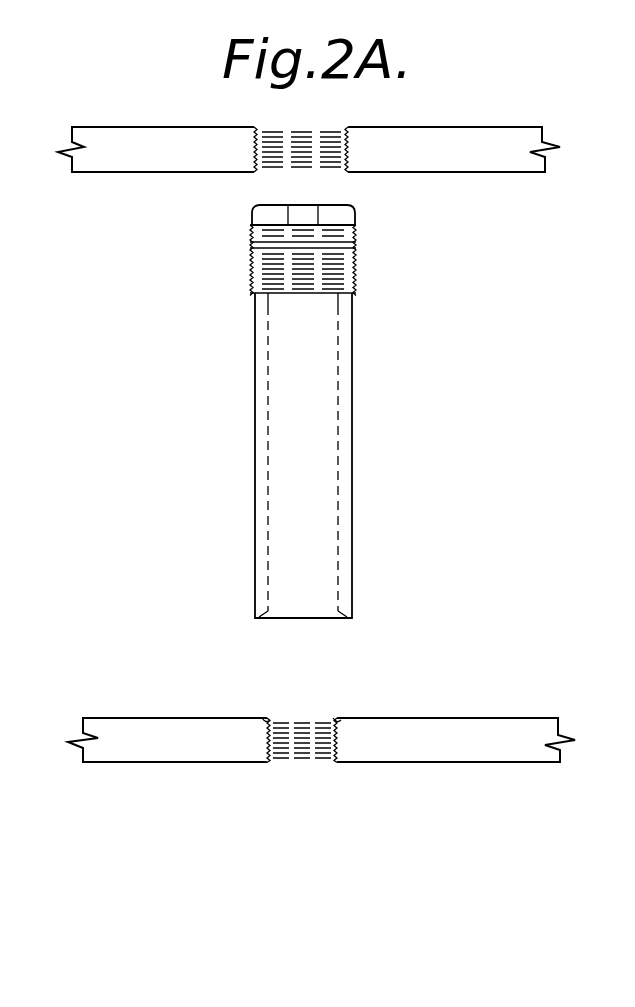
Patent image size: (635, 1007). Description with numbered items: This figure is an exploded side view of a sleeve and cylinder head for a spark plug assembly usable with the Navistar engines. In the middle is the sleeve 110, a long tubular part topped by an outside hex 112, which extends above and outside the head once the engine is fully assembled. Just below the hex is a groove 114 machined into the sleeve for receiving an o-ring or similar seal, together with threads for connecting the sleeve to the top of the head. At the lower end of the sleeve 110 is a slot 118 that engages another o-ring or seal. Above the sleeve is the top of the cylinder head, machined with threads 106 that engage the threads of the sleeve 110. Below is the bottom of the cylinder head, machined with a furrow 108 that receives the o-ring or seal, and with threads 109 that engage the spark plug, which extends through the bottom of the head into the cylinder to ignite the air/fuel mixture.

The threads 106 is at (250, 155).
The furrow 108 is at (345, 718).
The threads 109 is at (340, 745).
The sleeve 110 is at (322, 447).
The outside hex 112 is at (343, 213).
The groove 114 is at (356, 245).
The slot 118 is at (353, 621).